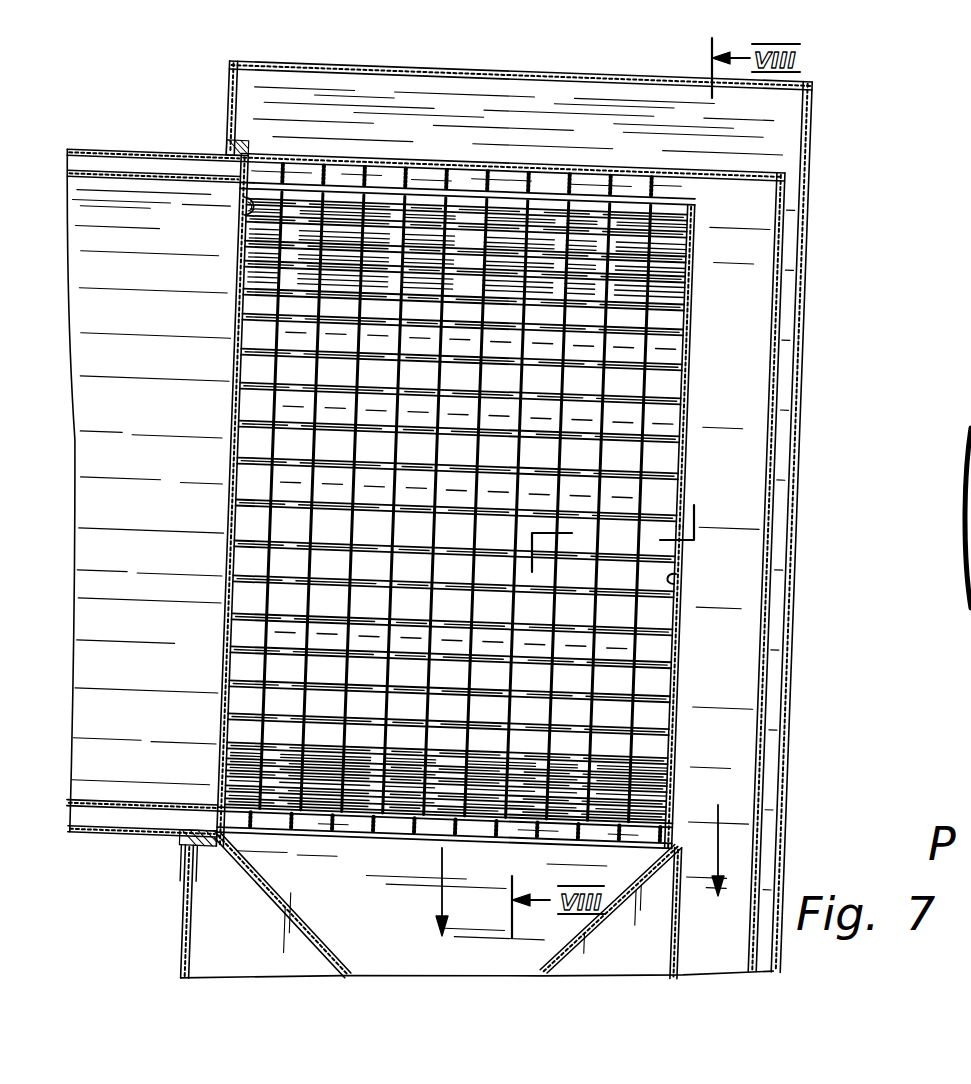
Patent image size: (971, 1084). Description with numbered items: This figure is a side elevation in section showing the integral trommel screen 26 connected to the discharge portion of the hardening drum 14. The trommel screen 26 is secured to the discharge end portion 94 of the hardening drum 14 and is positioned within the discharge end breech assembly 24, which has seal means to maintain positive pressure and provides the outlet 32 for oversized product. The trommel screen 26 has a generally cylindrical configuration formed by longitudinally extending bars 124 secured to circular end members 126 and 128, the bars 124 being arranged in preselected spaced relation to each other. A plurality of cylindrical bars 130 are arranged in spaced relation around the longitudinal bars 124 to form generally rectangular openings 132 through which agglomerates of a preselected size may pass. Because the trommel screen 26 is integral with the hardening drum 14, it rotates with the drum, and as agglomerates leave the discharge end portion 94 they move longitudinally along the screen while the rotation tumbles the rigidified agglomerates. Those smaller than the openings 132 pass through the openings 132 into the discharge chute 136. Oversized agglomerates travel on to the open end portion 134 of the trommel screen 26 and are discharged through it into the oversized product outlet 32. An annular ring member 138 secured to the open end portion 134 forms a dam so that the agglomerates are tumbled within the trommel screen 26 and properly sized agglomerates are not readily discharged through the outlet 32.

The hardening drum 14 is at (130, 152).
The discharge end breech assembly 24 is at (822, 154).
The trommel screen 26 is at (510, 183).
The outlet 32 is at (702, 946).
The discharge end portion 94 is at (243, 218).
The longitudinally extending bars 124 is at (660, 470).
The circular end member 126 is at (226, 524).
The circular end member 128 is at (680, 685).
The cylindrical bars 130 is at (404, 186).
The openings 132 is at (250, 404).
The open end portion 134 is at (678, 580).
The discharge chute 136 is at (462, 968).
The annular ring member 138 is at (695, 246).